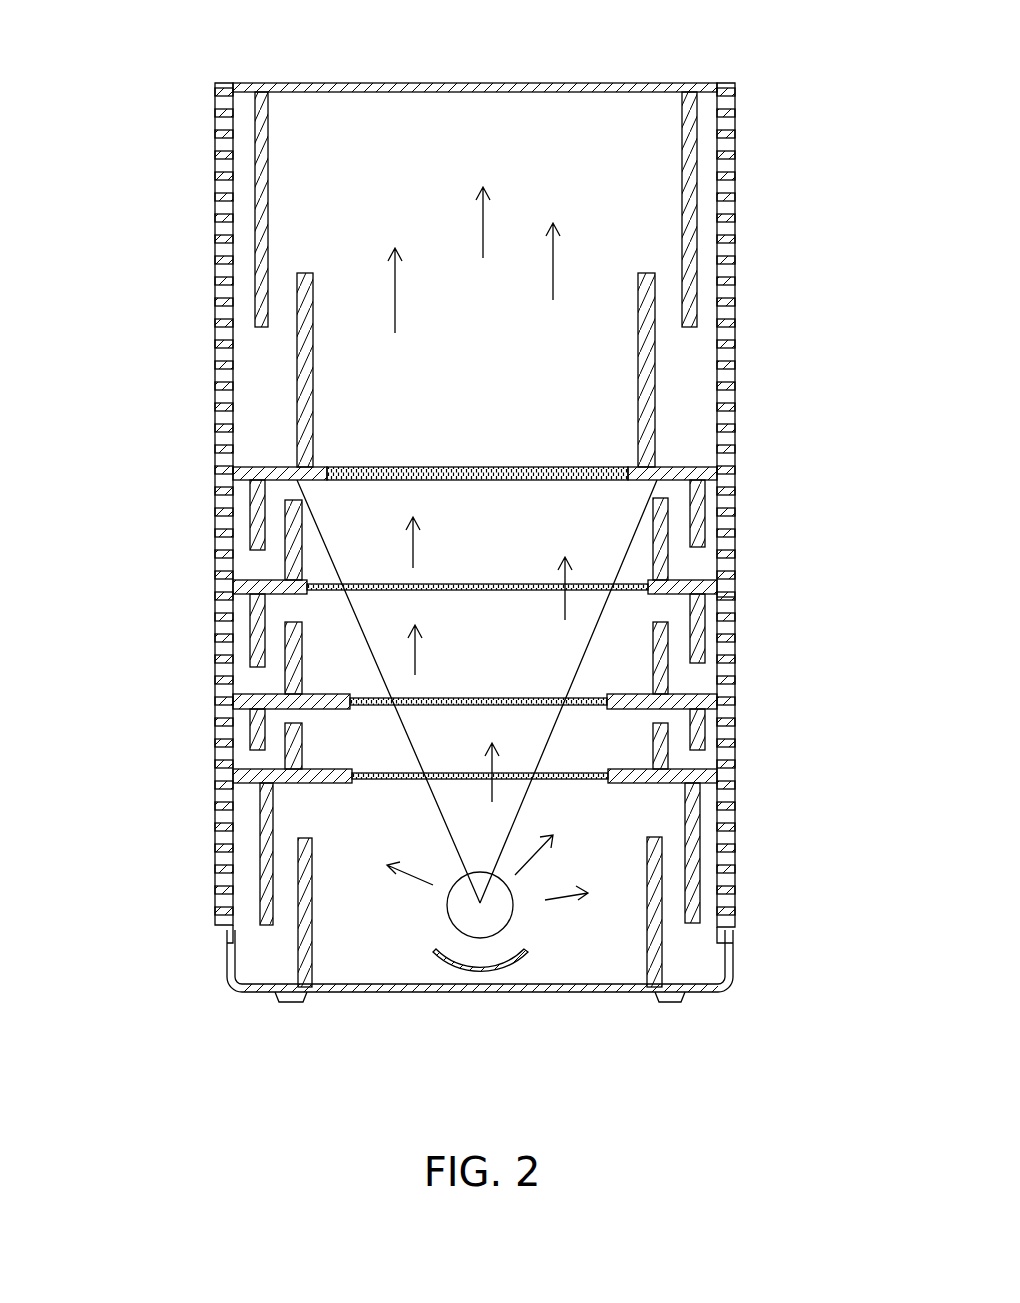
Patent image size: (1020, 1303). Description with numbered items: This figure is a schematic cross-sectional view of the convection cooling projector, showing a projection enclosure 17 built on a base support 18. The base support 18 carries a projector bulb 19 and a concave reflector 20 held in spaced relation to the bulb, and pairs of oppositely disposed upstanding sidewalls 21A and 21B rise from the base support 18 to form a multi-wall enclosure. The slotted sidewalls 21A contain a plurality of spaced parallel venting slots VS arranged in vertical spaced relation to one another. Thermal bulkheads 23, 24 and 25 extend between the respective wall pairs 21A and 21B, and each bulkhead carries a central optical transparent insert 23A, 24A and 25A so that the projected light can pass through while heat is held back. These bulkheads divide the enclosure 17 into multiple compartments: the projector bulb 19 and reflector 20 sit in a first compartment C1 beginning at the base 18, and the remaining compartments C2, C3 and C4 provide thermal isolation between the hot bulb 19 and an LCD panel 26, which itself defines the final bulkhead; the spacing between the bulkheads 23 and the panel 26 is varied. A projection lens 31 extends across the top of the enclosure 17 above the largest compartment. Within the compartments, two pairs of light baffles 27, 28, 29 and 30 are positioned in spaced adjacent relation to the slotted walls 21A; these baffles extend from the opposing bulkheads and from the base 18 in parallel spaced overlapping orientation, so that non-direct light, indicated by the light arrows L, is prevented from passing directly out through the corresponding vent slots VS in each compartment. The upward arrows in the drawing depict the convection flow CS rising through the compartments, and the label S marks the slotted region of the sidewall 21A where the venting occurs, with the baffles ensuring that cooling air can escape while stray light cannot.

The projection enclosure 17 is at (470, 472).
The base support 18 is at (612, 992).
The projector bulb 19 is at (448, 908).
The concave reflector 20 is at (463, 968).
The upstanding sidewall 21A is at (747, 387).
The upstanding sidewall 21B is at (205, 380).
The thermal bulkhead 23 is at (414, 784).
The central optical transparent insert 23A is at (402, 780).
The thermal bulkhead 24 is at (416, 658).
The central optical transparent insert 24A is at (503, 698).
The thermal bulkhead 25 is at (413, 547).
The central optical transparent insert 25A is at (507, 584).
The LCD panel 26 is at (470, 467).
The light baffle 27 is at (262, 868).
The light baffle 28 is at (257, 725).
The light baffle 29 is at (253, 620).
The light baffle 30 is at (255, 495).
The projection lens 31 is at (518, 82).
The convection space CS is at (619, 202).
The venting slot VS is at (222, 250).
The slit S is at (730, 597).
The light arrows L is at (548, 900).
The first compartment C1 is at (614, 832).
The compartment C2 is at (619, 750).
The compartment C3 is at (629, 667).
The compartment C4 is at (612, 525).